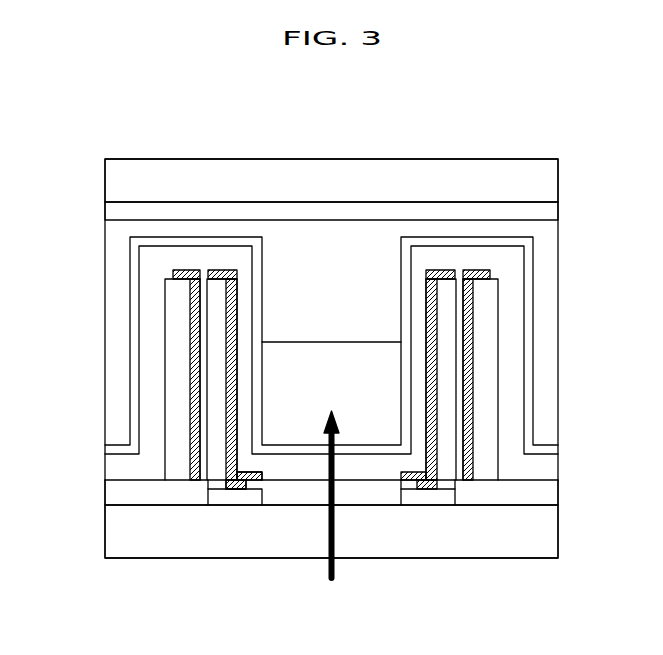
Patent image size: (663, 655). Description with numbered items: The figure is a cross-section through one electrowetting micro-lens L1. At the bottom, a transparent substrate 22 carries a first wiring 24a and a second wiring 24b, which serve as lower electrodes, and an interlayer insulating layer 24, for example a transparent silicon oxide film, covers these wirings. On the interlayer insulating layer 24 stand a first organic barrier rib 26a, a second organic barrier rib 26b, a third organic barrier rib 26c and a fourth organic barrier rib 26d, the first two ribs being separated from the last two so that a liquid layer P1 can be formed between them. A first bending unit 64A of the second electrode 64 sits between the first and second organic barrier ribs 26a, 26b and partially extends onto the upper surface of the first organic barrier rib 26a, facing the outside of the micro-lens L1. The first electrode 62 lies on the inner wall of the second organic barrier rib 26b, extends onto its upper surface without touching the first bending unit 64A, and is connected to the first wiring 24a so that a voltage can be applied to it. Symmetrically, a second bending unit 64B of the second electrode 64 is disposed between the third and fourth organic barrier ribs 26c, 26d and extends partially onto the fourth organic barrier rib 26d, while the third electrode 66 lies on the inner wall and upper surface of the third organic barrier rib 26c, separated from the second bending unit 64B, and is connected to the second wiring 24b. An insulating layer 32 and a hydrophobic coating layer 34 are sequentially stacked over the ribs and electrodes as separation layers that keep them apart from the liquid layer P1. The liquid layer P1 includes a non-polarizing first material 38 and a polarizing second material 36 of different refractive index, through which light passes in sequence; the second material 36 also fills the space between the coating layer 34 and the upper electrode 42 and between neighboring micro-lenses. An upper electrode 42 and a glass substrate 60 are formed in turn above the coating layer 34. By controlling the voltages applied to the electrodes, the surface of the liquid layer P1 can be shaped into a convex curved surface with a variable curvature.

The micro-lens L1 is at (86, 149).
The glass substrate 60 is at (558, 180).
The upper electrode 42 is at (558, 212).
The transparent substrate 22 is at (558, 532).
The interlayer insulating layer 24 is at (558, 492).
The first wiring 24a is at (235, 498).
The second wiring 24b is at (428, 498).
The first organic barrier rib 26a is at (174, 314).
The second organic barrier rib 26b is at (211, 365).
The third organic barrier rib 26c is at (453, 313).
The fourth organic barrier rib 26d is at (488, 360).
The insulating layer 32 is at (105, 468).
The coating layer 34 is at (134, 410).
The second material 36 is at (368, 327).
The first material 38 is at (297, 437).
The first electrode 62 is at (227, 271).
The second electrode 64 is at (190, 464).
The first bending unit 64A is at (185, 271).
The second bending unit 64B is at (481, 271).
The third electrode 66 is at (433, 410).
The liquid layer P1 is at (373, 603).